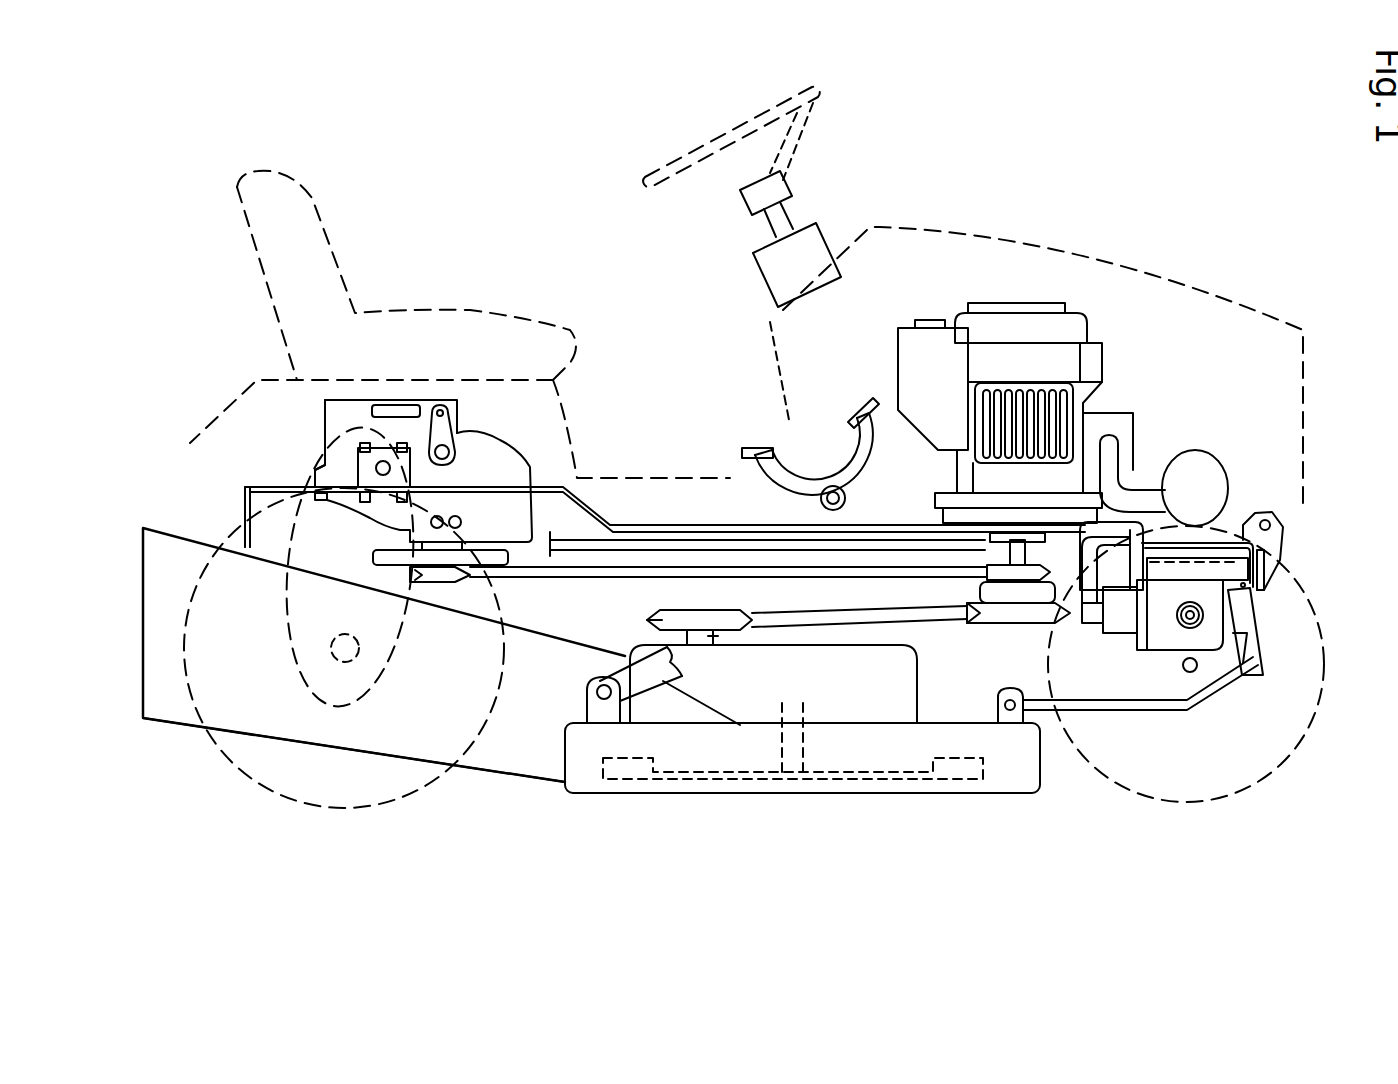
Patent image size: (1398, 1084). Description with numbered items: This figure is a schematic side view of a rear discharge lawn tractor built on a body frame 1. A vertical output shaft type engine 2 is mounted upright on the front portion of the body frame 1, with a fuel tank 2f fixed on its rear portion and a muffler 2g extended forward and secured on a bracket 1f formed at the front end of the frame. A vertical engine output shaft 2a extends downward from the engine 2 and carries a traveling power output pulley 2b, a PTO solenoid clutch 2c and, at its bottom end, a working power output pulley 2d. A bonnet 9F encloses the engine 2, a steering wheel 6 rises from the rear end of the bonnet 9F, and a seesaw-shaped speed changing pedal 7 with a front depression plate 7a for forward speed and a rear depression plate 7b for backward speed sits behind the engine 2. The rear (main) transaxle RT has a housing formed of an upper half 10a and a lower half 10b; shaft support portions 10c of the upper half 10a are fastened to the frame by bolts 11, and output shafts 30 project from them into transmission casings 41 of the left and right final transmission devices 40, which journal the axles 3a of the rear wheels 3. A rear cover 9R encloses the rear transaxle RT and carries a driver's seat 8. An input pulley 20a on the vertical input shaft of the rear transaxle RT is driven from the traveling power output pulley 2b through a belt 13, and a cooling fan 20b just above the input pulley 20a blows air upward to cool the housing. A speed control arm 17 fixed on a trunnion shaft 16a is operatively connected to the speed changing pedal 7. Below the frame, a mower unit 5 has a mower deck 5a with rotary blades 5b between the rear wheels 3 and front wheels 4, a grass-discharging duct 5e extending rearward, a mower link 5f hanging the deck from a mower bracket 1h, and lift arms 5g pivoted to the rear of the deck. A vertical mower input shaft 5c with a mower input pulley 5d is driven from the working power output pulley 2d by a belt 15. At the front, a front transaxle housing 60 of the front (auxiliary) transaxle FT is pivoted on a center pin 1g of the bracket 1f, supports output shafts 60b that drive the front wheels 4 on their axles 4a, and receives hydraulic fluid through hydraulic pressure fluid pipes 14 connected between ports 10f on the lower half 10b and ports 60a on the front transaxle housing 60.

The body frame 1 is at (653, 525).
The bracket 1f is at (1280, 535).
The fore-and-aft horizontal center pin 1g is at (1263, 563).
The mower bracket 1h is at (1330, 645).
The vertical output shaft type engine 2 is at (1100, 363).
The vertical engine output shaft 2a is at (1020, 550).
The traveling power output pulley 2b is at (1037, 563).
The PTO solenoid clutch 2c is at (1007, 597).
The working power output pulley 2d is at (1033, 622).
The fuel tank 2f is at (948, 388).
The muffler 2g is at (1197, 450).
The rear wheels 3 is at (235, 765).
The axle 3a is at (340, 648).
The front wheels 4 is at (1120, 780).
The axles 4a is at (1198, 670).
The mower unit 5 is at (520, 815).
The mower deck 5a is at (1020, 793).
The rotary blades 5b is at (847, 778).
The vertical mower input shaft 5c is at (713, 635).
The mower input pulley 5d is at (657, 610).
The grass-discharging duct 5e is at (312, 750).
The mower link 5f is at (1113, 710).
The lift arms 5g is at (620, 667).
The steering wheel 6 is at (807, 120).
The speed changing pedal 7 is at (870, 473).
The front depression plate 7a is at (853, 420).
The rear depression plate 7b is at (760, 448).
The driver's seat 8 is at (320, 212).
The bonnet 9F is at (1053, 243).
The rear cover 9R is at (587, 403).
The rear (main) transaxle RT is at (330, 414).
The upper half 10a is at (500, 479).
The lower half 10b is at (512, 531).
The shaft support portions 10c is at (357, 470).
The ports 10f is at (447, 450).
The bolts 11 is at (363, 443).
The belt 13 is at (760, 567).
The hydraulic pressure fluid pipes 14 is at (573, 540).
The belt 15 is at (935, 623).
The trunnion shaft 16a is at (447, 437).
The speed control arm 17 is at (437, 516).
The input pulley 20a is at (452, 587).
The cooling fan 20b is at (340, 568).
The output shaft 30 is at (374, 466).
The final transmission devices 40 is at (268, 540).
The transmission casing 41 is at (327, 540).
The front transaxle housing 60 is at (1227, 620).
The ports 60a is at (1090, 623).
The output shafts 60b is at (1190, 633).
The front (auxiliary) transaxle FT is at (1153, 662).